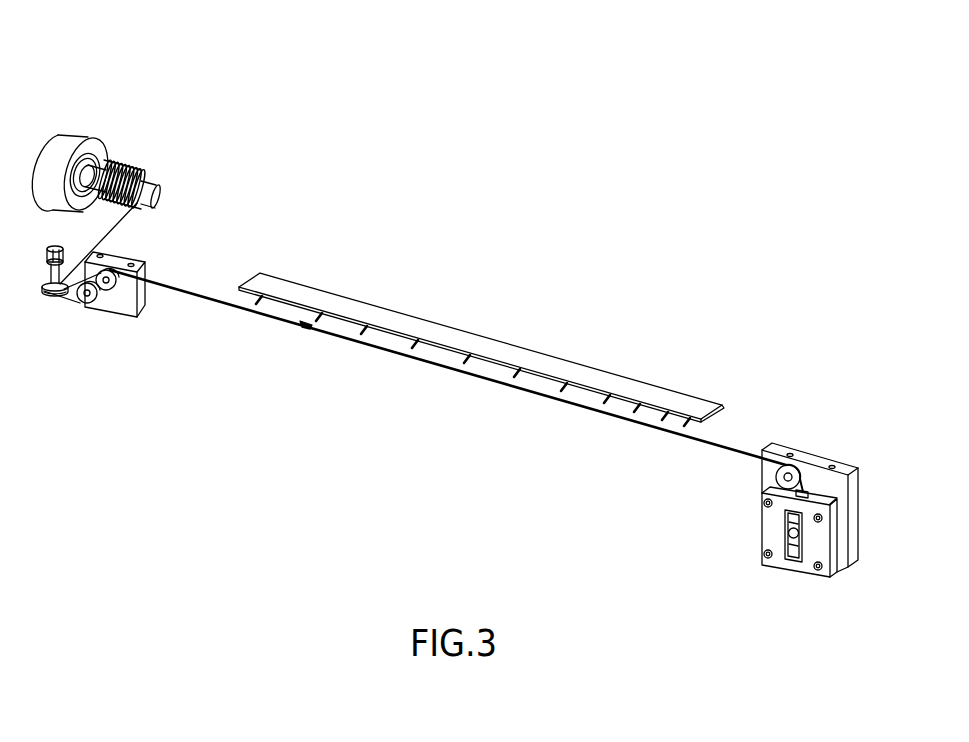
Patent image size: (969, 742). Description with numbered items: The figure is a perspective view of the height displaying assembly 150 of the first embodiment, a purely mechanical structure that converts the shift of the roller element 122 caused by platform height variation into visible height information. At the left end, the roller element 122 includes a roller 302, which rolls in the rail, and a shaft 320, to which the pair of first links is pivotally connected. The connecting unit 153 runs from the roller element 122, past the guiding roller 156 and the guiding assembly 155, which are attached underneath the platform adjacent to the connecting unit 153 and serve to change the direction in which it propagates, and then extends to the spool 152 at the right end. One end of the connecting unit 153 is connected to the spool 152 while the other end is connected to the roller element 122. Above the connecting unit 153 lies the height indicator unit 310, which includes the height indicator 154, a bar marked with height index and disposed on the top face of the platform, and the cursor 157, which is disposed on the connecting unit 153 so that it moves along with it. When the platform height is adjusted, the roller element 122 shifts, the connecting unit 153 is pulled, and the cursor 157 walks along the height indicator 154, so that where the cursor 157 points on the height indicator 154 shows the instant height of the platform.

The roller element 122 is at (61, 131).
The roller 302 is at (98, 150).
The shaft 320 is at (138, 168).
The guiding roller 156 is at (52, 296).
The guiding assembly 155 is at (117, 300).
The connecting unit 153 is at (433, 365).
The height indicator unit 310 is at (481, 305).
The height indicator 154 is at (387, 321).
The cursor 157 is at (311, 273).
The height displaying assembly 150 is at (641, 326).
The spool 152 is at (813, 462).